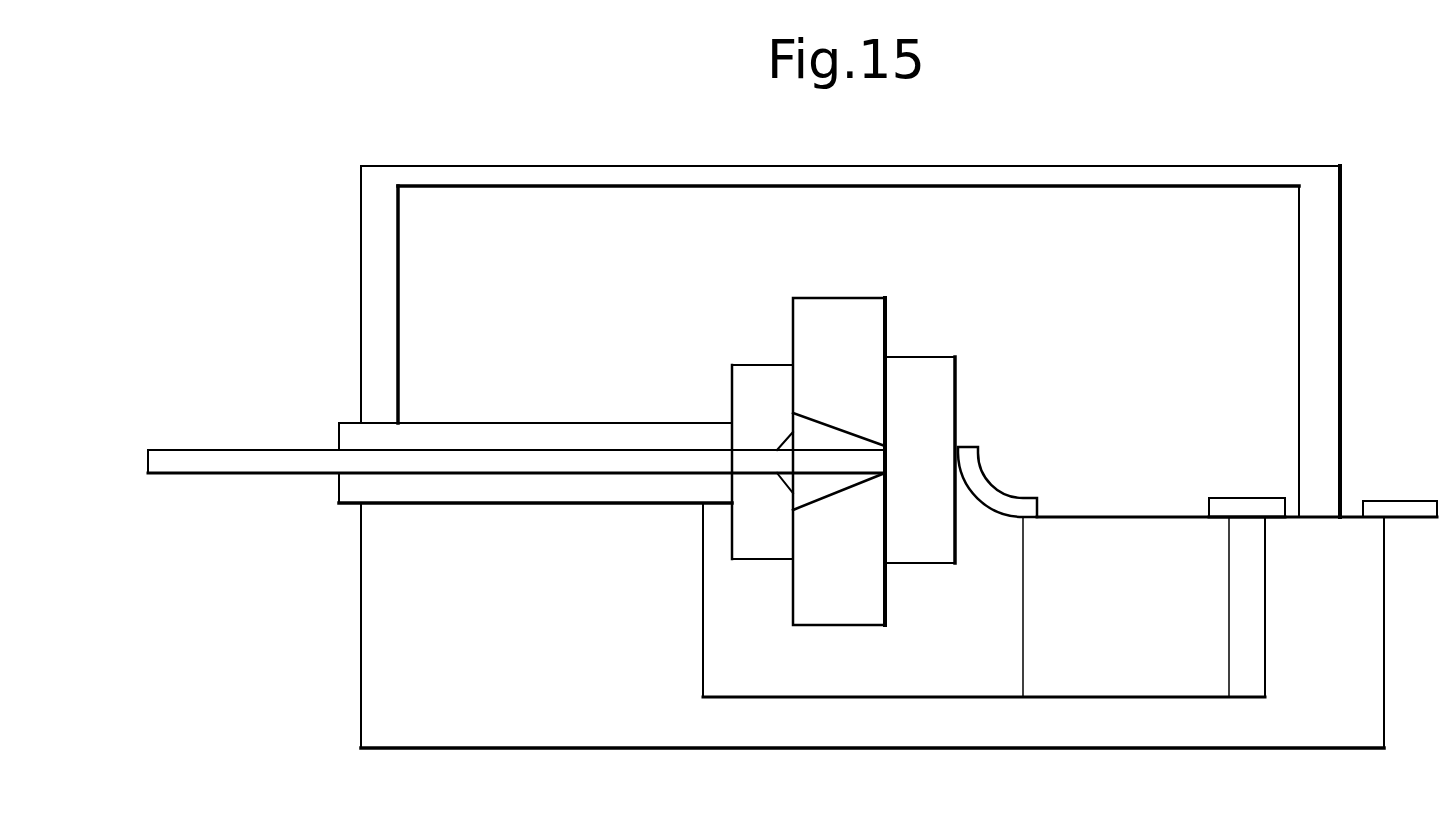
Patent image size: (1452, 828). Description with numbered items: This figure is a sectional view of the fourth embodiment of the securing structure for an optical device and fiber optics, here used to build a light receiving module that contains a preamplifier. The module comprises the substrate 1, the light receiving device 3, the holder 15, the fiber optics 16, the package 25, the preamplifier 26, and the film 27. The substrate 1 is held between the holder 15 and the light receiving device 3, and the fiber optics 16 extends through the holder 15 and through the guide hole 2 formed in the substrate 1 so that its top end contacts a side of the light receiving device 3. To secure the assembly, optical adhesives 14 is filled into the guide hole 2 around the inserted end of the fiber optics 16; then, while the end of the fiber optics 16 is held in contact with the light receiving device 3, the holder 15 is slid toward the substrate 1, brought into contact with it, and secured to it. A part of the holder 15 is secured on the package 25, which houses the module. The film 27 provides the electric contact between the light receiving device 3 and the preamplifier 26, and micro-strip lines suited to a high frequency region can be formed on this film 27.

The substrate 1 is at (840, 318).
The guide hole 2 is at (810, 432).
The light receiving device 3 is at (948, 374).
The optical adhesives 14 is at (810, 485).
The holder 15 is at (541, 437).
The fiber optics 16 is at (266, 450).
The package 25 is at (393, 677).
The preamplifier 26 is at (1037, 653).
The film 27 is at (1023, 497).